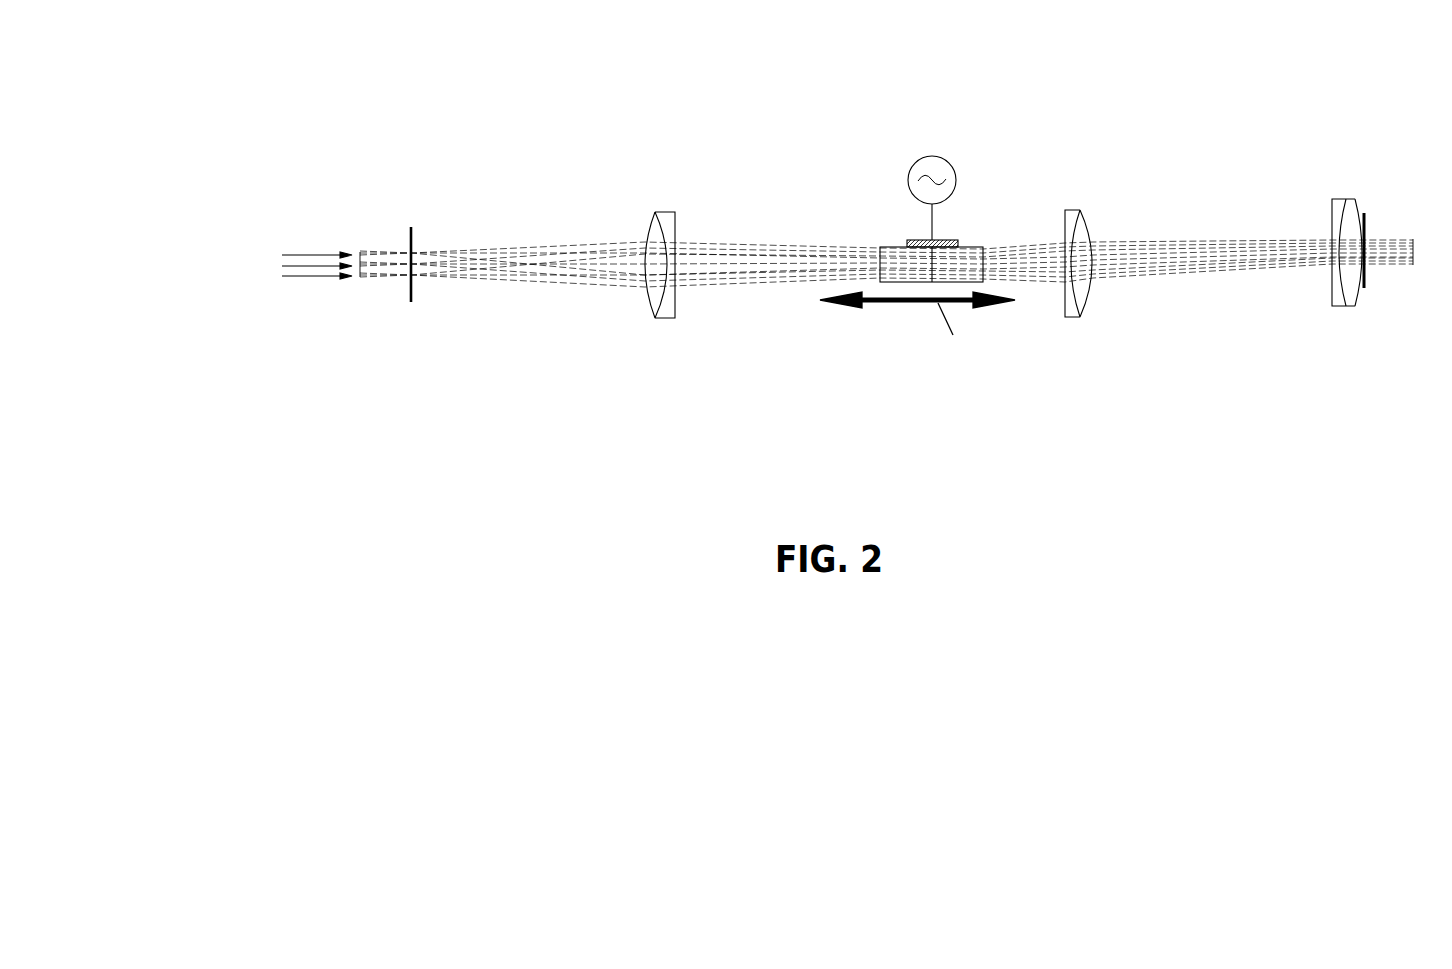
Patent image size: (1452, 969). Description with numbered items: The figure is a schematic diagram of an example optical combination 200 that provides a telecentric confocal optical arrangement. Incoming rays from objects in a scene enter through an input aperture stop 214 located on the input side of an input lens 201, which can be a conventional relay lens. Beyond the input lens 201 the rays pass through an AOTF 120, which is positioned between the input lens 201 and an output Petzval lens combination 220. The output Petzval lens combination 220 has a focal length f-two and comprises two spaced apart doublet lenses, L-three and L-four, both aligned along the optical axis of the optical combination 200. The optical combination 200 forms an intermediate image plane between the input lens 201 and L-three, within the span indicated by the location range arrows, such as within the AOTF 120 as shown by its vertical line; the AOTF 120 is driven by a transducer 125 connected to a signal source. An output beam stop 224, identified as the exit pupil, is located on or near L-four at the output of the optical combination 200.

The optical combination 200 is at (480, 428).
The input aperture stop 214 is at (442, 262).
The input lens 201 is at (664, 278).
The AOTF 120 is at (895, 260).
The transducer 125 is at (917, 240).
The output Petzval lens combination 220 is at (1207, 172).
The output beam stop 224 is at (1370, 297).